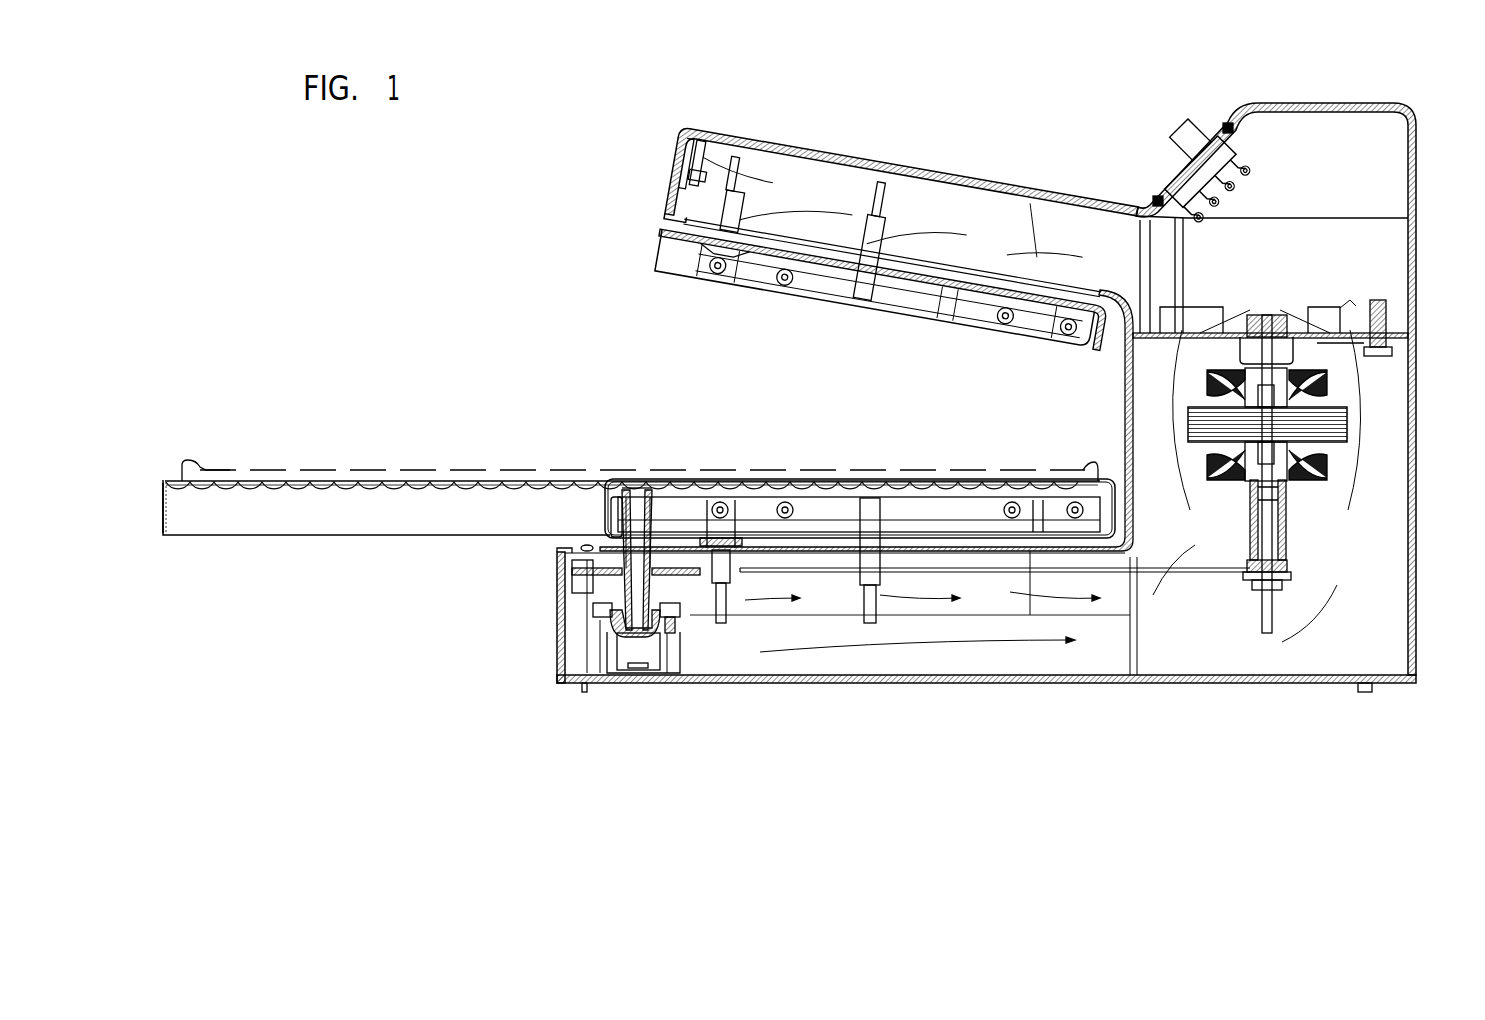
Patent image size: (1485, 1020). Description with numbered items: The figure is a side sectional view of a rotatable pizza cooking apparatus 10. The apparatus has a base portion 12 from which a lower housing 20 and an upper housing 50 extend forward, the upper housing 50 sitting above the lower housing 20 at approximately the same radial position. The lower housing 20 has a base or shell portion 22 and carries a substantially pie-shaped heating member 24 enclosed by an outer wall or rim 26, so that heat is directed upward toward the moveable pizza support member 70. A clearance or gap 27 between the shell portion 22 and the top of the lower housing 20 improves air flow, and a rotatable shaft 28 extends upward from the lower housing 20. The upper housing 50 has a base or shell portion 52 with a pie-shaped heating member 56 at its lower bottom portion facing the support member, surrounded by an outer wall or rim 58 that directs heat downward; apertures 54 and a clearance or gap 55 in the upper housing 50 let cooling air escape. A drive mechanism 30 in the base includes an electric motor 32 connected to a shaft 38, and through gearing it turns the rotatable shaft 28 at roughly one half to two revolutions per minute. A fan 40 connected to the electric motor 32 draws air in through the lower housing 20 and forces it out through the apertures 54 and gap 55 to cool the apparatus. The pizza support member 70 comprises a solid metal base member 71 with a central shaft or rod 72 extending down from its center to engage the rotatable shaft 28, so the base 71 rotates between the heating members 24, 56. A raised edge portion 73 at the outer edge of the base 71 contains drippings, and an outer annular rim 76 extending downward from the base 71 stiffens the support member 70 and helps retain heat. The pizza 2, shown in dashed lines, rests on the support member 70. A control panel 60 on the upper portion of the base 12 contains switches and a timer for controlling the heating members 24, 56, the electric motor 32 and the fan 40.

The pizza 2 is at (372, 470).
The cooking apparatus 10 is at (875, 115).
The base portion 12 is at (1415, 556).
The lower housing 20 is at (787, 684).
The base or shell portion 22 is at (912, 684).
The heating member 24 is at (922, 506).
The outer wall or rim 26 is at (610, 502).
The clearance or gap 27 is at (560, 556).
The rotatable shaft 28 is at (640, 496).
The drive mechanism 30 is at (1318, 510).
The electric motor 32 is at (1335, 412).
The shaft 38 is at (1125, 575).
The fan 40 is at (1342, 308).
The upper housing 50 is at (955, 172).
The base or shell portion 52 is at (990, 180).
The apertures 54 is at (705, 150).
The clearance or gap 55 is at (663, 207).
The heating member 56 is at (950, 312).
The outer wall or rim 58 is at (660, 240).
The control panel 60 is at (1203, 124).
The pizza support member 70 is at (383, 531).
The base member 71 is at (283, 488).
The central shaft or rod 72 is at (630, 505).
The raised edge portion 73 is at (163, 481).
The outer annular rim 76 is at (163, 520).